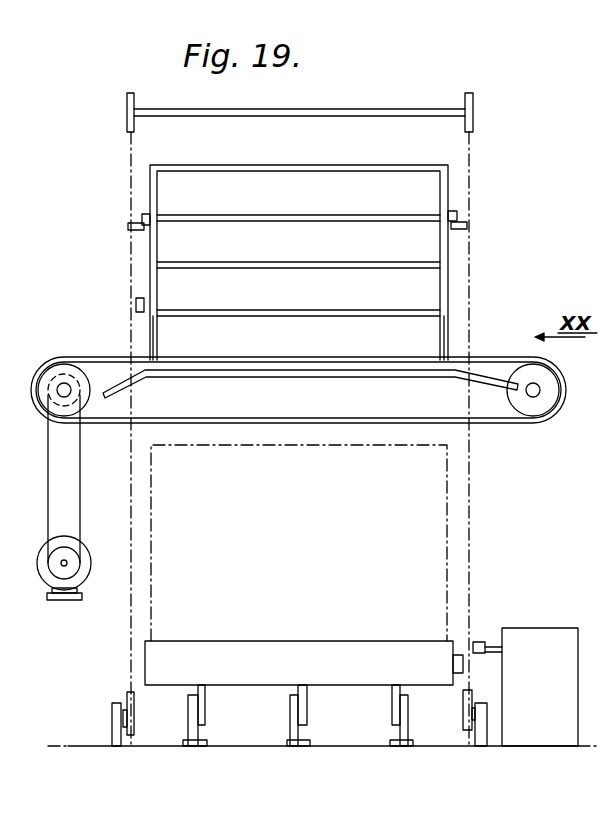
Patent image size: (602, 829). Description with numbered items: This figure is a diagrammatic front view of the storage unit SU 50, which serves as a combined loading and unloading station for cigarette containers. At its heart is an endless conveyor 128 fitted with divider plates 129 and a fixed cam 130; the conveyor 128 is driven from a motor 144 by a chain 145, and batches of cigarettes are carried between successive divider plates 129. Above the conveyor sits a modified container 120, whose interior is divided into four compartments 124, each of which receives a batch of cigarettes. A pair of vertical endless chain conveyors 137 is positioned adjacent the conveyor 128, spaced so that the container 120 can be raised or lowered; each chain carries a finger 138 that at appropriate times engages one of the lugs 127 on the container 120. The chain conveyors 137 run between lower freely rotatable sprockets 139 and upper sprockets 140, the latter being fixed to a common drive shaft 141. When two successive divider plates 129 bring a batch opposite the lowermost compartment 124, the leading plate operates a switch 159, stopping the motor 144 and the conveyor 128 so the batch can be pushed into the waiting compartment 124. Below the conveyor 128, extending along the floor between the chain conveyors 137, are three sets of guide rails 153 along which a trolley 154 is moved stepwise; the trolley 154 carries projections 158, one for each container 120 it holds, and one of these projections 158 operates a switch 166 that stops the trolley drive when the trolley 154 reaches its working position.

The pallet loading station 50 is at (510, 100).
The modified container 120 is at (303, 163).
The compartments 124 is at (409, 283).
The lugs 127 is at (142, 219).
The endless conveyor 128 is at (527, 337).
The divider plates 129 is at (146, 335).
The fixed cam 130 is at (378, 372).
The vertical endless chain conveyors 137 is at (131, 546).
The finger 138 is at (128, 227).
The lower sprockets 139 is at (130, 727).
The upper sprockets 140 is at (127, 106).
The common drive shaft 141 is at (312, 108).
The motor 144 is at (85, 572).
The chain 145 is at (82, 445).
The guide rails 153 is at (412, 744).
The trolley 154 is at (437, 638).
The projections 158 is at (453, 663).
The switch 159 is at (136, 305).
The switch 166 is at (517, 642).